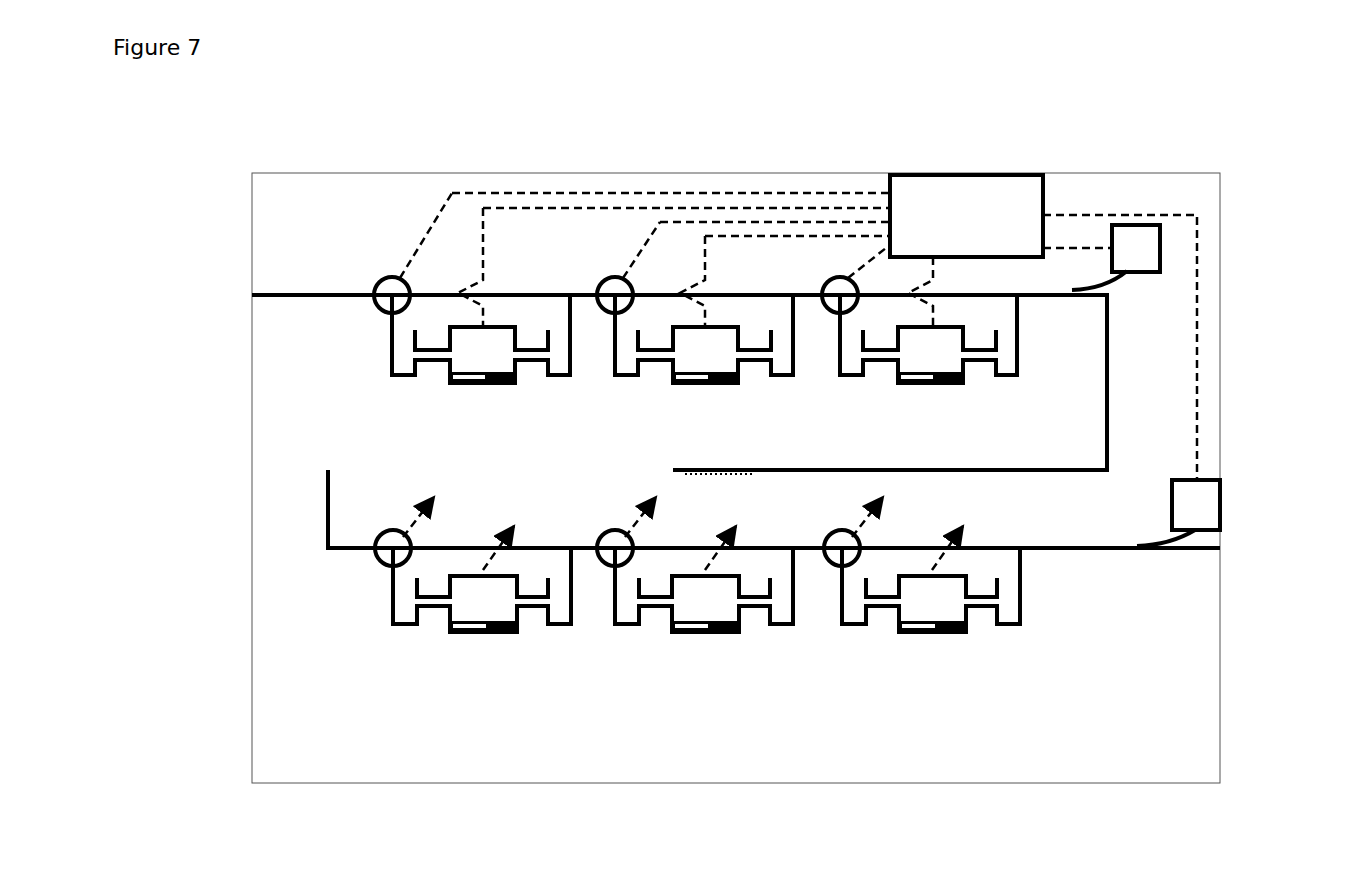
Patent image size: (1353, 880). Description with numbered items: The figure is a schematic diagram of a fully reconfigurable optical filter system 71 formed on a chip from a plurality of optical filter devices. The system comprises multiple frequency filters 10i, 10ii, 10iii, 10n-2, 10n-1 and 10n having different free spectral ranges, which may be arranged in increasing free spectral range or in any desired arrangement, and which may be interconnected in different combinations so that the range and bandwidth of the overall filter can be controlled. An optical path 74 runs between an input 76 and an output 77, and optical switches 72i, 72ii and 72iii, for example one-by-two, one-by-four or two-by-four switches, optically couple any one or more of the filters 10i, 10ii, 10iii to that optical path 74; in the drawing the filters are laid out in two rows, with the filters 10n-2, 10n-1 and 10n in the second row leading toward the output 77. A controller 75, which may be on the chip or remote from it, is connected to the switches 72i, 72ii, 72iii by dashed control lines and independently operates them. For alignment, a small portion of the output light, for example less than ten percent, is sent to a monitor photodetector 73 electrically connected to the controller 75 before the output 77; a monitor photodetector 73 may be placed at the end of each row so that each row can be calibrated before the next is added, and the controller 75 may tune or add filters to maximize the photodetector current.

The optical filter 10i is at (466, 404).
The optical filter 10ii is at (700, 404).
The optical filter 10iii is at (933, 406).
The optical filter 10n-2 is at (481, 656).
The optical filter 10n-1 is at (700, 666).
The optical filter 10n is at (933, 676).
The reconfigurable optical filter system 71 is at (1074, 171).
The optical switch 72i is at (388, 278).
The optical switch 72ii is at (612, 277).
The optical switch 72iii is at (836, 277).
The monitor photodetector 73 is at (1147, 267).
The optical path 74 is at (325, 293).
The controller 75 is at (824, 327).
The input 76 is at (252, 295).
The output 77 is at (1220, 552).